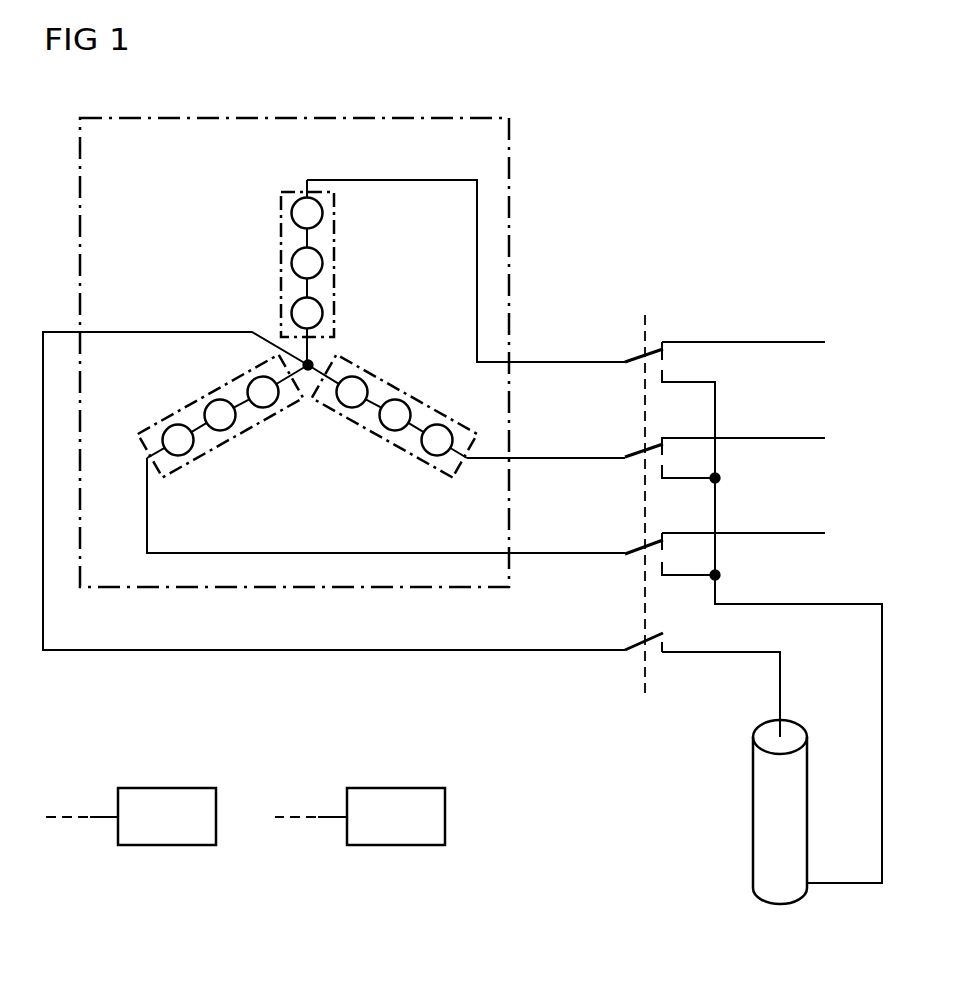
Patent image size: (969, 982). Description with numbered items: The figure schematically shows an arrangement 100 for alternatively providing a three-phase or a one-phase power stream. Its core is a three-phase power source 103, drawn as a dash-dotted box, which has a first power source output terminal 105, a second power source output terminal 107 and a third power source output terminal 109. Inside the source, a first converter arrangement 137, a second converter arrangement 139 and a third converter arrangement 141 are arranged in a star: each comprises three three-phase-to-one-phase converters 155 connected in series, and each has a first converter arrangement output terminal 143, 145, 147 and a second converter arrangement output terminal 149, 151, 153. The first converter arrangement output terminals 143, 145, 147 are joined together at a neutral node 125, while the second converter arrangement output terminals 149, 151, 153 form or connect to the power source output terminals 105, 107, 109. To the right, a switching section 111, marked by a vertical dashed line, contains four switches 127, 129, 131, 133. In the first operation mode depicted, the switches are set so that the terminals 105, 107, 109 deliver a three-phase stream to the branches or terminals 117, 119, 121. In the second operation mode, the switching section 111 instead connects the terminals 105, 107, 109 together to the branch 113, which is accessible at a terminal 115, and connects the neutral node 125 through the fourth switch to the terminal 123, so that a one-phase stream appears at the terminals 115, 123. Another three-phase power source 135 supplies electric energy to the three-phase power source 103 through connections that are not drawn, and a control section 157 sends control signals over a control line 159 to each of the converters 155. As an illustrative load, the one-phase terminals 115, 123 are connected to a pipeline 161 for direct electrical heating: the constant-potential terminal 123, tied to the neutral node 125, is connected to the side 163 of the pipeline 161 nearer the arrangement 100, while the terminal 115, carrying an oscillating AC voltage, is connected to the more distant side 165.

The arrangement 100 is at (784, 158).
The 3-phase power source 103 is at (283, 118).
The first power source output terminal 105 is at (510, 360).
The second power source output terminal 107 is at (510, 457).
The third power source output terminal 109 is at (510, 552).
The switching section 111 is at (628, 708).
The branch 113 is at (717, 408).
The terminal 115 is at (797, 603).
The branch or terminal 117 is at (764, 341).
The branch or terminal 119 is at (743, 471).
The branch or terminal 121 is at (802, 532).
The terminal 123 is at (719, 654).
The neutral node 125 is at (315, 362).
The switch 127 is at (634, 358).
The switch 129 is at (634, 454).
The switch 131 is at (634, 551).
The switch 133 is at (634, 648).
The other 3-phase power source 135 is at (166, 788).
The first converter arrangement 137 is at (335, 236).
The second converter arrangement 139 is at (399, 453).
The third converter arrangement 141 is at (216, 453).
The first converter arrangement output terminal 143 is at (296, 348).
The first converter arrangement output terminal 145 is at (335, 375).
The first converter arrangement output terminal 147 is at (290, 382).
The second converter arrangement output terminal 149 is at (306, 190).
The second converter arrangement output terminal 151 is at (457, 456).
The second converter arrangement output terminal 153 is at (157, 455).
The 3-phase-to-1-phase converter 155 is at (292, 214).
The control section 157 is at (394, 788).
The control line 159 is at (333, 815).
The pipeline 161 is at (756, 816).
The side of the pipeline 163 is at (794, 726).
The side of the pipeline 165 is at (779, 906).